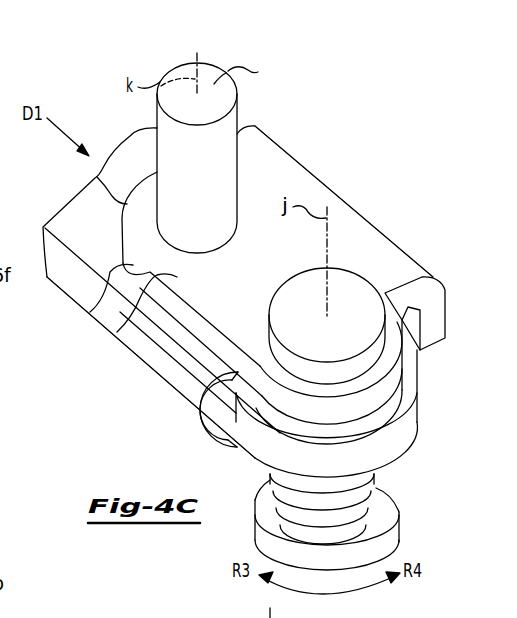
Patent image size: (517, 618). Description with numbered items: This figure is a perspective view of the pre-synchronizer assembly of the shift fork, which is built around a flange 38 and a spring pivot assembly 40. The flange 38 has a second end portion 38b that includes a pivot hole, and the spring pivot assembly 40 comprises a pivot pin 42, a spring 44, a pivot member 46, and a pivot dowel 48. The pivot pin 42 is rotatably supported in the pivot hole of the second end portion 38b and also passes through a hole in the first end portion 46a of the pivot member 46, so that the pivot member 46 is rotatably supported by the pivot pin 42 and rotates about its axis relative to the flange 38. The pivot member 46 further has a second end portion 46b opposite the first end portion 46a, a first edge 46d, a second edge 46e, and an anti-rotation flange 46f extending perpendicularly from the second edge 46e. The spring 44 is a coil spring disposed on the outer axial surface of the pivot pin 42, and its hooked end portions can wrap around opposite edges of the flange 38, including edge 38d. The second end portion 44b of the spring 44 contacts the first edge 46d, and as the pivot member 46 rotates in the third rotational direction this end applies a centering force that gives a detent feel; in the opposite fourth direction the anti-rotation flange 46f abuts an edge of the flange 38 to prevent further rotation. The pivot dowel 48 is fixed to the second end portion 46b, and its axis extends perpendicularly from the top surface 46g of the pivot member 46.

The flange 38 is at (153, 352).
The second end portion 38b is at (393, 433).
The edge 38d is at (187, 378).
The spring pivot assembly 40 is at (366, 121).
The pivot pin 42 is at (347, 290).
The spring 44 is at (380, 497).
The second end portion 44b is at (200, 428).
The pivot member 46 is at (283, 147).
The first end portion 46a is at (390, 380).
The second end portion 46b is at (97, 177).
The first edge 46d is at (90, 312).
The second edge 46e is at (302, 163).
The anti-rotation flange 46f is at (440, 305).
The top surface 46g is at (113, 333).
The pivot dowel 48 is at (218, 157).